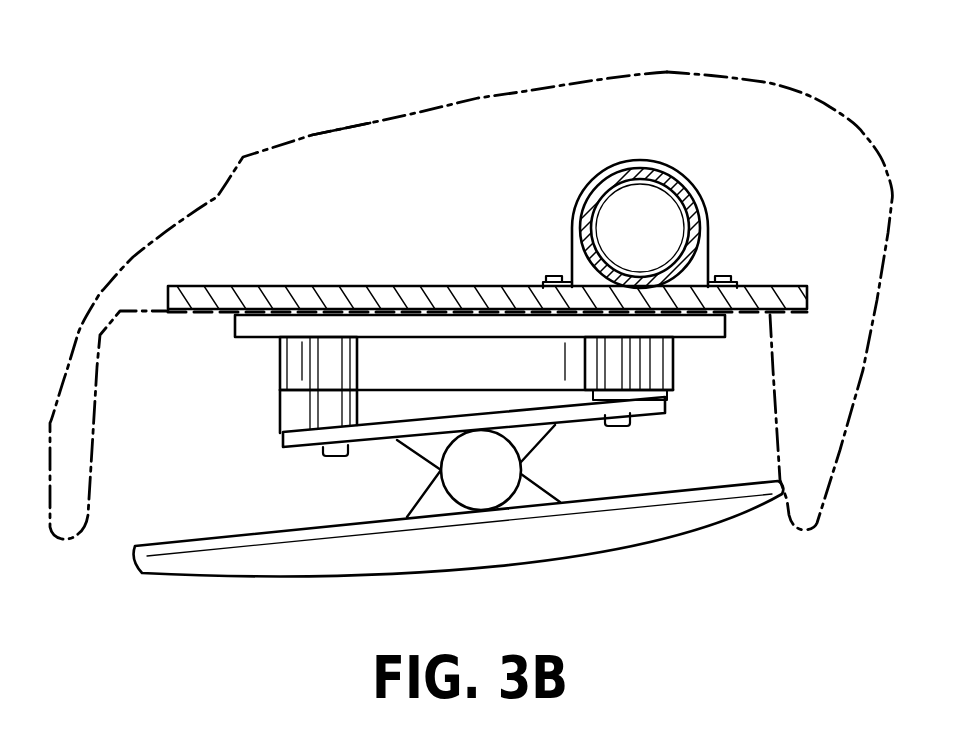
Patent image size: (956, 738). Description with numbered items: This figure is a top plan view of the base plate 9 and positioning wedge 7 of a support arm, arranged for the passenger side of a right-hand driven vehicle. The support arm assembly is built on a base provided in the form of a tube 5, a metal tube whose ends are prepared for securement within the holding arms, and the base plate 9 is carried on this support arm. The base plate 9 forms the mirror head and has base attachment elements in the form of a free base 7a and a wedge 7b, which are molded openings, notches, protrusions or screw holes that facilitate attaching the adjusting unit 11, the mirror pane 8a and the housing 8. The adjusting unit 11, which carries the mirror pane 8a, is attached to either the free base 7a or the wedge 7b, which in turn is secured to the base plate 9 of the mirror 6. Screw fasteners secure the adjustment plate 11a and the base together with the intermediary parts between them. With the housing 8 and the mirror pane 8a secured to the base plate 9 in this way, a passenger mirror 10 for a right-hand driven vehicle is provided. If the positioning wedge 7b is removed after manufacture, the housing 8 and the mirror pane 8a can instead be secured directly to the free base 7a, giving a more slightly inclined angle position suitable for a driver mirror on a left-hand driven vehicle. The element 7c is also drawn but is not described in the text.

The tube 5 is at (672, 188).
The mirror 6 is at (470, 278).
The positioning wedge 7 is at (463, 425).
The free base 7a is at (278, 367).
The wedge 7b is at (283, 405).
The inclined plate portion 7c is at (390, 432).
The housing 8 is at (667, 72).
The mirror pane 8a is at (617, 542).
The base plate 9 is at (725, 320).
The passenger mirror 10 is at (306, 128).
The adjusting unit 11 is at (535, 467).
The adjustment plate 11a is at (667, 397).